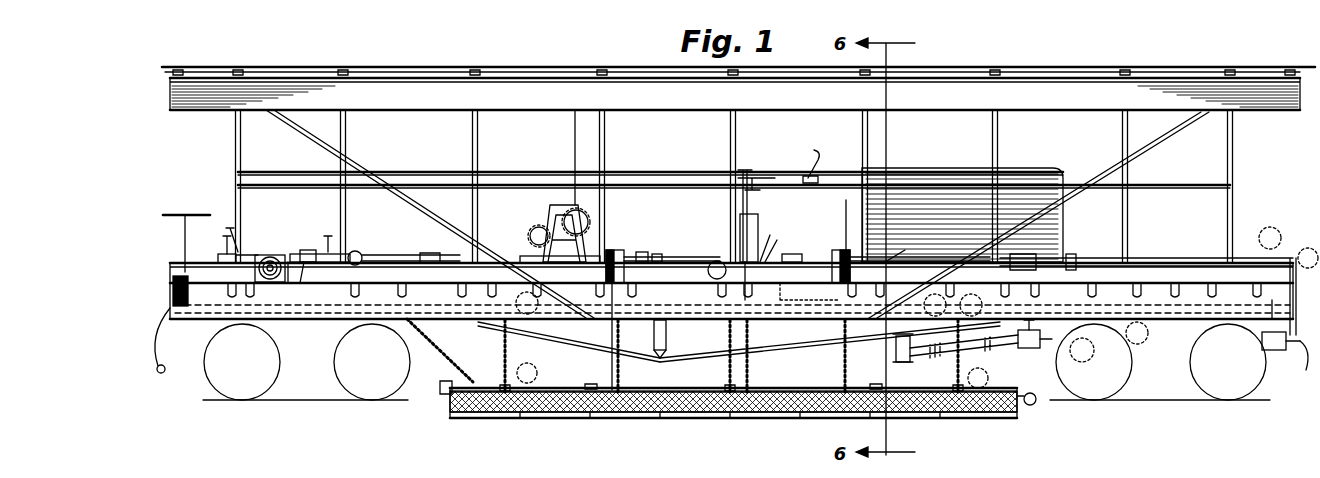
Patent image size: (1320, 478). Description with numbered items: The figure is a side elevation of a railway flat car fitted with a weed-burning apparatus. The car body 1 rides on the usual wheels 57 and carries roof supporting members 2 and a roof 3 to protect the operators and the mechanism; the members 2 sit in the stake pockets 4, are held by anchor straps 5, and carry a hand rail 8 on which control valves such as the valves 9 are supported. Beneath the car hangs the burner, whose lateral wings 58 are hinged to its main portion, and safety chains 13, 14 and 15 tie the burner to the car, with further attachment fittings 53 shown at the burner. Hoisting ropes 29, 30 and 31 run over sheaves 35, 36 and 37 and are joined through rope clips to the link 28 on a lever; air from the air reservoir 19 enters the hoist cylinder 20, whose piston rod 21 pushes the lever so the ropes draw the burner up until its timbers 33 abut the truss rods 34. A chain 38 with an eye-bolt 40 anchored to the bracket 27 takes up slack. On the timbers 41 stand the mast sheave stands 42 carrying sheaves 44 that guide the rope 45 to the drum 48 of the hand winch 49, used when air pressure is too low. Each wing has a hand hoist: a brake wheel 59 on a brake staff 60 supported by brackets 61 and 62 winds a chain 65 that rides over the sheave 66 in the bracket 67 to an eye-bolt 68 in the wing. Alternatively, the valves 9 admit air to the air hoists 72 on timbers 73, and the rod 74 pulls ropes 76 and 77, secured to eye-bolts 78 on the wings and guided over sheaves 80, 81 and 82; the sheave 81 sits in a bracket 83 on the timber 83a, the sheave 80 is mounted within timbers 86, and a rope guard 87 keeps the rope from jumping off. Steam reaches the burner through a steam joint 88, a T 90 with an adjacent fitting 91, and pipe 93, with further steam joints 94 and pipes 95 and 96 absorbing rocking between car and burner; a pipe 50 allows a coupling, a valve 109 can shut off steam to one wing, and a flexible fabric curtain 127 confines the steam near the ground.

The body of railway car 1 is at (204, 320).
The roof supporting members 2 is at (990, 148).
The roof 3 is at (1070, 76).
The stake pockets 4 is at (356, 294).
The anchor straps 5 is at (342, 308).
The hand rail 8 is at (537, 180).
The valves 9 is at (811, 165).
The safety chain 13 is at (441, 350).
The safety chain 14 is at (504, 360).
The safety chain 15 is at (619, 374).
The air reservoir 19 is at (962, 215).
The hoist cylinder 20 is at (268, 253).
The piston rod 21 is at (295, 253).
The bracket 27 is at (218, 263).
The link 28 is at (356, 252).
The hoisting rope 29 is at (412, 255).
The hoisting rope 30 is at (730, 341).
The hoisting rope 31 is at (958, 305).
The timbers 33 is at (588, 384).
The truss rods 34 is at (560, 341).
The sheave 35 is at (527, 303).
The sheave 36 is at (717, 261).
The sheave 37 is at (971, 305).
The chain 38 is at (322, 256).
The eye-bolt 40 is at (234, 247).
The timbers 41 is at (266, 284).
The mast sheave stands 42 is at (289, 283).
The sheaves 44 is at (301, 283).
The rope 45 is at (330, 248).
The drum 48 is at (548, 212).
The hand winch 49 is at (577, 170).
The pipe 50 is at (1283, 347).
The hook 53 is at (726, 386).
The wheels 57 is at (342, 362).
The lateral wings 58 is at (800, 418).
The brake wheel 59 is at (758, 176).
The brake staff 60 is at (749, 208).
The bracket 61 is at (776, 248).
The bracket 62 is at (758, 228).
The chain 65 is at (742, 341).
The sheave 66 is at (748, 276).
The bracket 67 is at (776, 241).
The eye-bolt 68 is at (749, 388).
The air hoist 72 is at (1178, 258).
The timbers 73 is at (1092, 258).
The rod 74 is at (1030, 256).
The rope 76 is at (618, 311).
The rope 77 is at (836, 303).
The eye-bolts 78 is at (624, 388).
The sheave 80 is at (630, 274).
The sheave 81 is at (622, 250).
The sheaves 82 is at (792, 254).
The bracket 83 is at (657, 254).
The timber 83a is at (893, 265).
The timbers 86 is at (612, 250).
The rope guard 87 is at (846, 225).
The steam joint 88 is at (1272, 352).
The T 90 is at (1270, 300).
The bracket 91 is at (1298, 276).
The pipe 93 is at (1137, 333).
The steam joints 94 is at (1027, 349).
The pipe 95 is at (895, 360).
The pipe 96 is at (1003, 344).
The valve 109 is at (1032, 393).
The flexible fabric curtain 127 is at (990, 415).